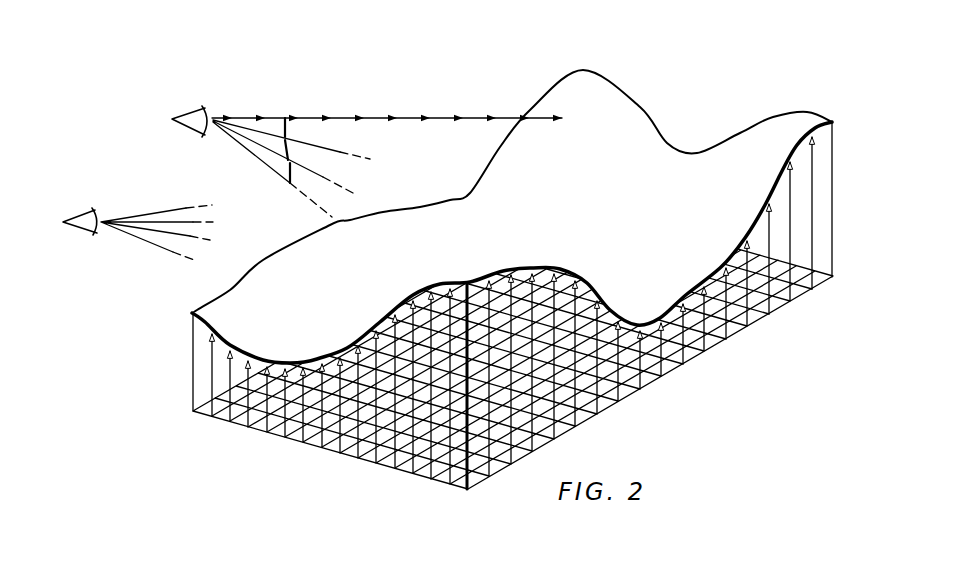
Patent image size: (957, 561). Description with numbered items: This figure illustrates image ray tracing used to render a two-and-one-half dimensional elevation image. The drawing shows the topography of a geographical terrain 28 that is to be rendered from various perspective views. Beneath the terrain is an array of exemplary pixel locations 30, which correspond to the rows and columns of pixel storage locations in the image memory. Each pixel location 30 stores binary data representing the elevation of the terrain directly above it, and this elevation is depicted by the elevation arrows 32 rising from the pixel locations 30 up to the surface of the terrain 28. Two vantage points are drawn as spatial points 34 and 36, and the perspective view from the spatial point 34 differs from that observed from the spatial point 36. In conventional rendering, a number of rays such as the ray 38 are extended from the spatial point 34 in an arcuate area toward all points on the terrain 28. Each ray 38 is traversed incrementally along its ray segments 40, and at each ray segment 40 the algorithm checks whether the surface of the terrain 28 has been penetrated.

The geographical terrain 28 is at (627, 216).
The pixel locations 30 is at (197, 413).
The elevation arrows 32 is at (207, 368).
The spatial point 34 is at (193, 110).
The spatial point 36 is at (83, 210).
The ray 38 is at (441, 92).
The ray segments 40 is at (313, 117).